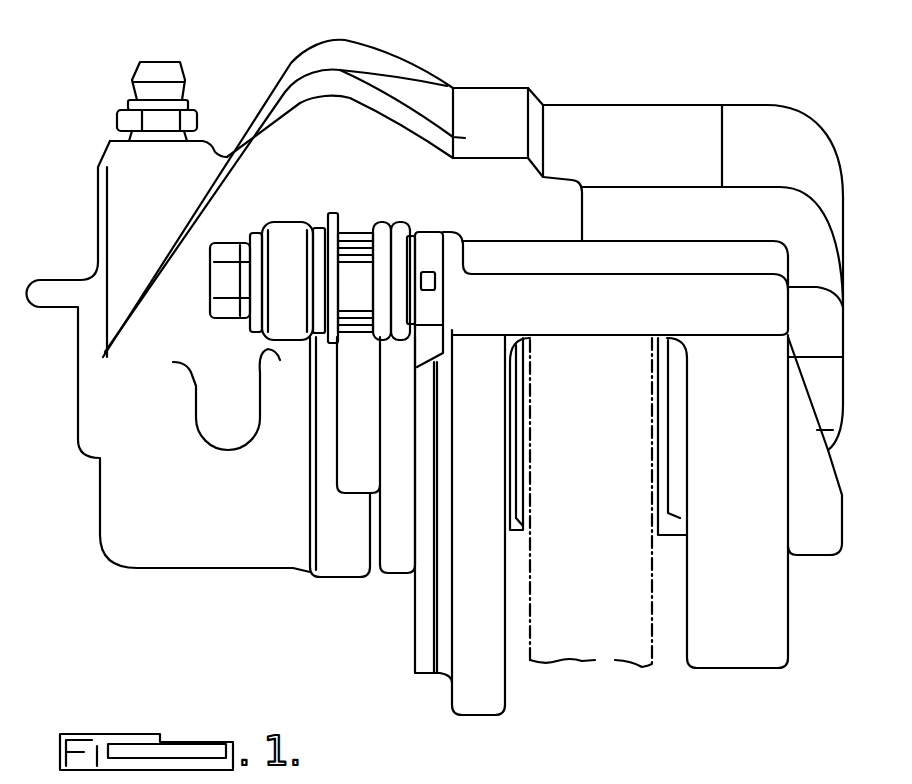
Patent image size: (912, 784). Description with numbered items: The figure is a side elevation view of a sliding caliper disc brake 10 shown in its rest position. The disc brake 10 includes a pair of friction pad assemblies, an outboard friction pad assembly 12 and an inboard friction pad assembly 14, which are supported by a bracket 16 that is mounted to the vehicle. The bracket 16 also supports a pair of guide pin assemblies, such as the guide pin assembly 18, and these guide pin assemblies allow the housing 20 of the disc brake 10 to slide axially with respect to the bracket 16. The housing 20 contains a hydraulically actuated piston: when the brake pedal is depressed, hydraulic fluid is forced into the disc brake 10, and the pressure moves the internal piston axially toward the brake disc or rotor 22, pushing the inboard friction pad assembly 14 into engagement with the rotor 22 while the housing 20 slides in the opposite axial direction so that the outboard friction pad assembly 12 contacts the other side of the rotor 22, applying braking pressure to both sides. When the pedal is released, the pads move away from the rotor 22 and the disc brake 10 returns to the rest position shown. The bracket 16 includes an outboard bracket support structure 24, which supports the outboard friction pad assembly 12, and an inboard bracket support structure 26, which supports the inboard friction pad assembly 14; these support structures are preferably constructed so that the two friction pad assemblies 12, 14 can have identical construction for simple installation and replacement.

The sliding caliper disc brake 10 is at (808, 107).
The outboard friction pad assembly 12 is at (667, 543).
The inboard friction pad assembly 14 is at (518, 535).
The bracket 16 is at (816, 556).
The guide pin assembly 18 is at (350, 222).
The housing 20 is at (493, 102).
The brake disc or rotor 22 is at (582, 642).
The outboard bracket support structure 24 is at (748, 652).
The inboard bracket support structure 26 is at (487, 700).